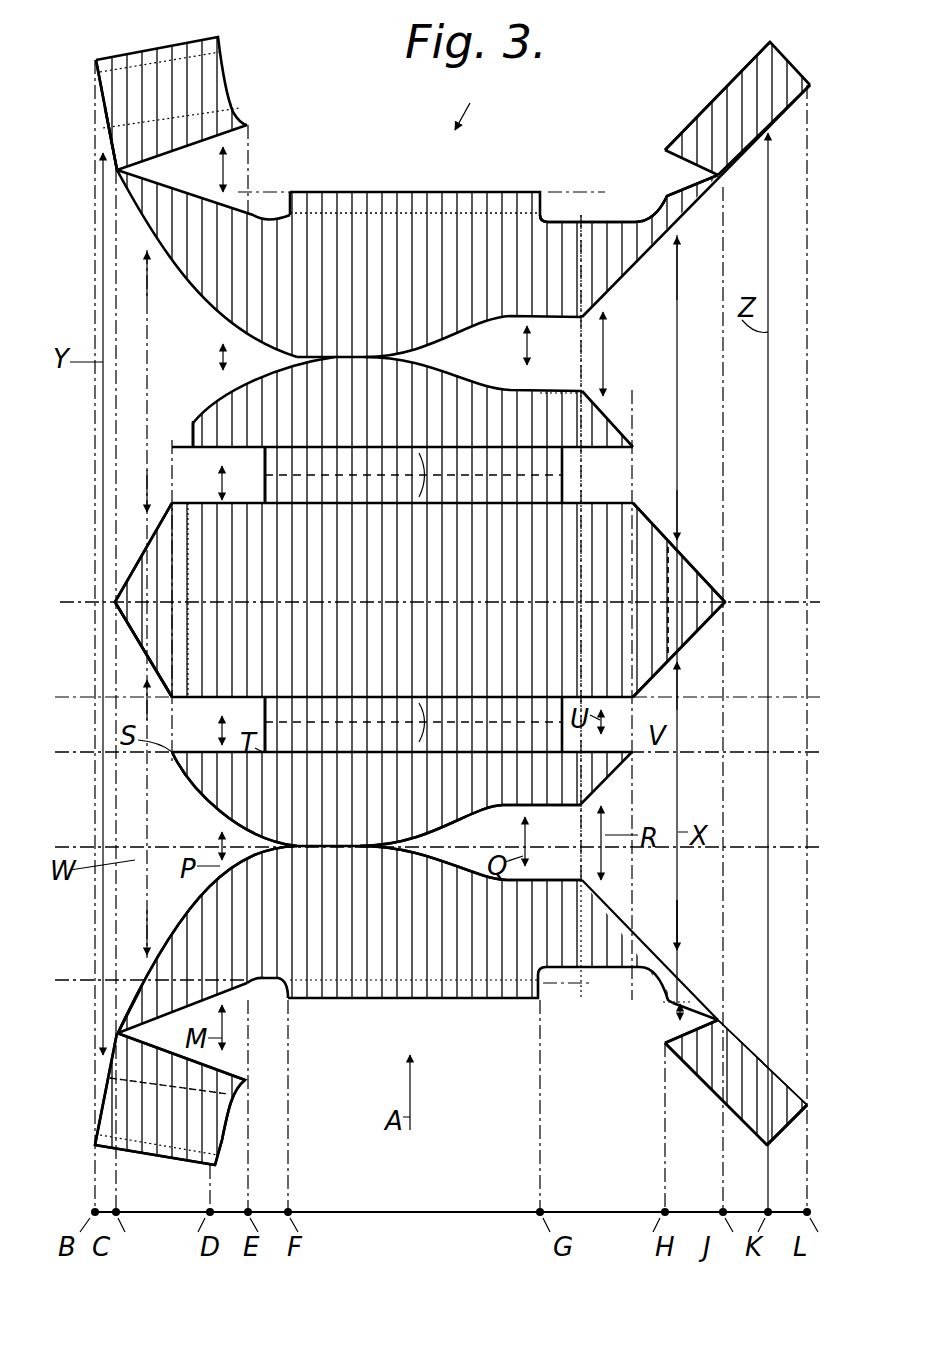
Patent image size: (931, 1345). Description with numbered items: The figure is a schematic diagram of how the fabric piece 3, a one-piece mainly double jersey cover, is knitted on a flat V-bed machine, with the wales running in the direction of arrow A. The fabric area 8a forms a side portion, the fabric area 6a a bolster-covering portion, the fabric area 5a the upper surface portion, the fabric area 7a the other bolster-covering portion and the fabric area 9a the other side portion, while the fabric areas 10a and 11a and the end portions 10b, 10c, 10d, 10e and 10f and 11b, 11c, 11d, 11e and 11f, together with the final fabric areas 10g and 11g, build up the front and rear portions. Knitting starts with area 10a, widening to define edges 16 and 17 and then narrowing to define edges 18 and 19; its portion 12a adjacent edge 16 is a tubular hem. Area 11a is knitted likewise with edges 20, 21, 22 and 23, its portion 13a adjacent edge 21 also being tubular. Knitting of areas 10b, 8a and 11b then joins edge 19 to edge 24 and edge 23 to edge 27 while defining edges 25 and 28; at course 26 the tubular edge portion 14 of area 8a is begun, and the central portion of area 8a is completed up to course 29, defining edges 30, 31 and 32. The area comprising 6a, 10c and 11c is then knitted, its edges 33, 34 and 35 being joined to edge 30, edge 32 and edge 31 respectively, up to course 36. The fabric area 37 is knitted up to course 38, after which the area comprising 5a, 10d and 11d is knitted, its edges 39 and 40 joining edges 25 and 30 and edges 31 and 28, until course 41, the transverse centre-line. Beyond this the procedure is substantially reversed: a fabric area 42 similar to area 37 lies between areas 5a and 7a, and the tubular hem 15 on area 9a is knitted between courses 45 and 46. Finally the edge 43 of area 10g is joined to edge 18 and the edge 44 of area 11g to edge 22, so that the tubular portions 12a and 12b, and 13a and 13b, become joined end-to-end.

The fabric piece 3 is at (474, 104).
The fabric area 5a is at (540, 570).
The fabric area 6a is at (447, 806).
The fabric area 7a is at (447, 398).
The fabric area 8a is at (358, 963).
The fabric area 9a is at (340, 235).
The fabric area 10a is at (105, 1130).
The end portion 10b is at (140, 1028).
The end portion 10c is at (183, 775).
The end portion 10d is at (140, 590).
The end portion 10e is at (185, 425).
The end portion 10f is at (152, 215).
The fabric area 10g is at (118, 96).
The fabric area 11a is at (775, 1097).
The end portion 11b is at (690, 1003).
The end portion 11c is at (607, 767).
The end portion 11d is at (658, 547).
The end portion 11e is at (605, 428).
The end portion 11f is at (676, 222).
The fabric area 11g is at (712, 116).
The tubular fabric portion 12a is at (178, 1157).
The tubular fabric portion 12b is at (120, 62).
The tubular fabric portion 13a is at (768, 1146).
The tubular fabric portion 13b is at (775, 58).
The edge portion 14 is at (456, 998).
The hem 15 is at (483, 205).
The edge 16 is at (125, 1152).
The edge 17 is at (228, 1128).
The edge 18 is at (107, 1088).
The edge 19 is at (237, 1075).
The edge 20 is at (730, 1122).
The edge 21 is at (770, 1135).
The edge 22 is at (745, 1043).
The edge 23 is at (663, 1041).
The edge 24 is at (233, 990).
The edge 25 is at (115, 1033).
The course 26 is at (85, 980).
The edge 27 is at (672, 1002).
The edge 28 is at (690, 1000).
The course 29 is at (80, 847).
The edge 30 is at (180, 922).
The edge 31 is at (645, 942).
The edge 32 is at (555, 875).
The edge 33 is at (220, 838).
The edge 34 is at (540, 810).
The edge 35 is at (605, 790).
The course 36 is at (65, 752).
The fabric area 37 is at (262, 718).
The course 38 is at (65, 696).
The edge 39 is at (137, 640).
The edge 40 is at (675, 645).
The course 41 is at (75, 603).
The fabric area 42 is at (262, 468).
The edge 43 is at (108, 143).
The edge 44 is at (732, 170).
The course 45 is at (600, 222).
The course 46 is at (562, 192).